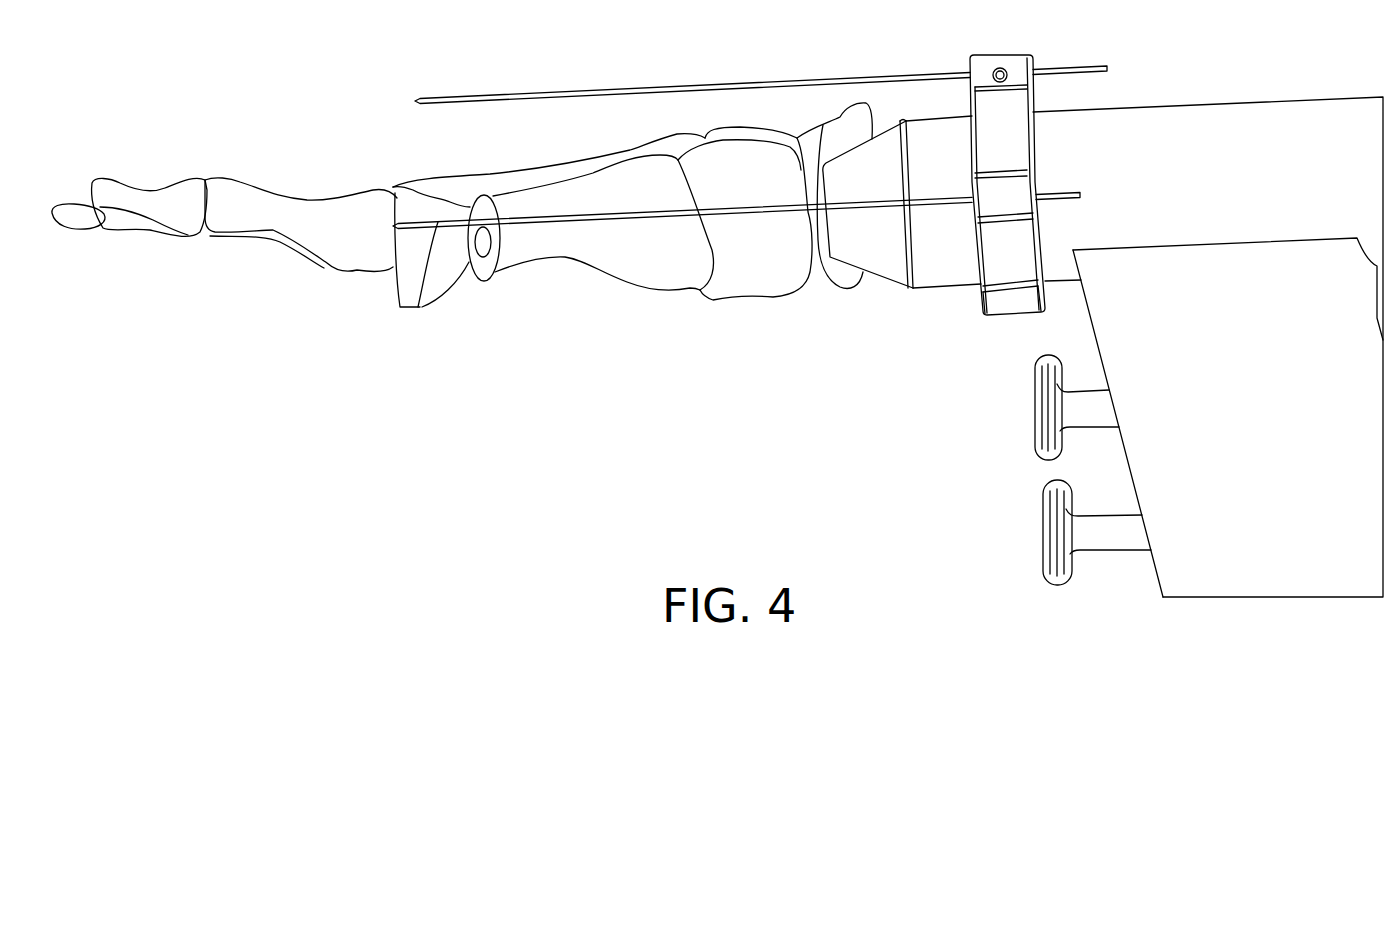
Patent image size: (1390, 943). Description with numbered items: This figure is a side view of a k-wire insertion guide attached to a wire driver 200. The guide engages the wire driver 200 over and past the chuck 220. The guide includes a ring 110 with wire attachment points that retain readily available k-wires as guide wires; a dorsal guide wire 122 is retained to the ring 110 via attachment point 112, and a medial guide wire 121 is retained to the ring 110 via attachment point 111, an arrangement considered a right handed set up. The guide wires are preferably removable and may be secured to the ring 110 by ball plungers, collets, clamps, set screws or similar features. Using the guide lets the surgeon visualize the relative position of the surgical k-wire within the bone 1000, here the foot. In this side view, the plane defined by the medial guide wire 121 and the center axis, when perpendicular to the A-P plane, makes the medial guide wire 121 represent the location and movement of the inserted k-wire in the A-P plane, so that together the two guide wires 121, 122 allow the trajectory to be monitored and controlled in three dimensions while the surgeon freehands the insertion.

The ring 110 is at (1061, 186).
The attachment point 111 is at (1013, 314).
The attachment point 112 is at (1003, 55).
The medial guide wire 121 is at (418, 307).
The dorsal guide wire 122 is at (621, 89).
The wire driver 200 is at (1238, 110).
The chuck 220 is at (945, 290).
The bone 1000 is at (347, 277).